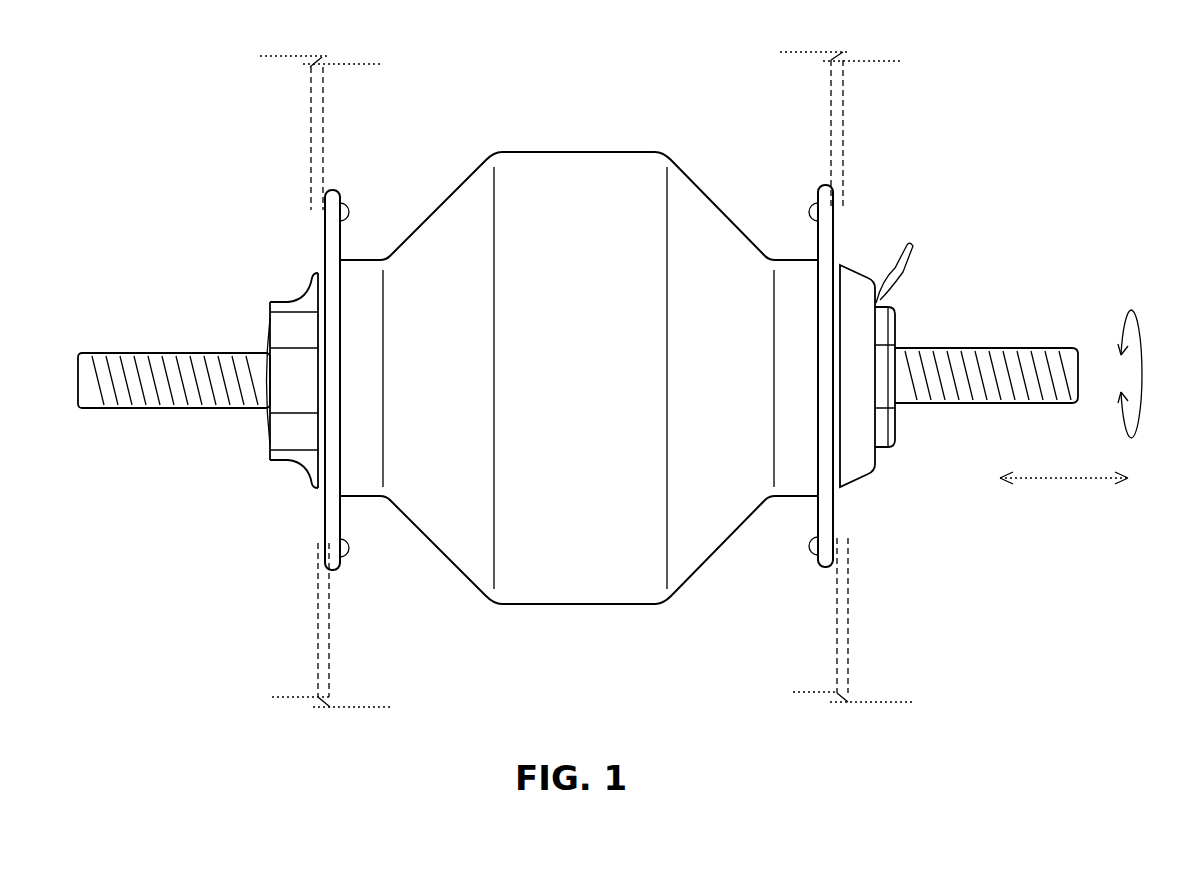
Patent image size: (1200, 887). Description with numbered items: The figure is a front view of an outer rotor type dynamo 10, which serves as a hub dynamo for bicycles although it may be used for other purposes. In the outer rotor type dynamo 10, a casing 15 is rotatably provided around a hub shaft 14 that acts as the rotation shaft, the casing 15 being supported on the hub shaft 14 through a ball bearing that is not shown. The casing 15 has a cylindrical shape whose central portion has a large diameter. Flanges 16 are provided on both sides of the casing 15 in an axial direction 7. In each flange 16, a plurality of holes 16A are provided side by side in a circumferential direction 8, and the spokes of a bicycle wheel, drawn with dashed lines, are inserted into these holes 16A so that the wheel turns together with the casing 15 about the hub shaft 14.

The outer rotor type dynamo 10 is at (164, 604).
The hub shaft 14 is at (167, 352).
The casing 15 is at (577, 151).
The flange 16 is at (324, 243).
The hole 16A is at (820, 185).
The axial direction 7 is at (1066, 482).
The circumferential direction 8 is at (1143, 330).